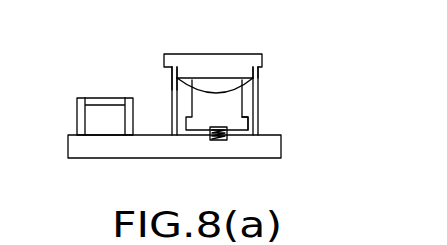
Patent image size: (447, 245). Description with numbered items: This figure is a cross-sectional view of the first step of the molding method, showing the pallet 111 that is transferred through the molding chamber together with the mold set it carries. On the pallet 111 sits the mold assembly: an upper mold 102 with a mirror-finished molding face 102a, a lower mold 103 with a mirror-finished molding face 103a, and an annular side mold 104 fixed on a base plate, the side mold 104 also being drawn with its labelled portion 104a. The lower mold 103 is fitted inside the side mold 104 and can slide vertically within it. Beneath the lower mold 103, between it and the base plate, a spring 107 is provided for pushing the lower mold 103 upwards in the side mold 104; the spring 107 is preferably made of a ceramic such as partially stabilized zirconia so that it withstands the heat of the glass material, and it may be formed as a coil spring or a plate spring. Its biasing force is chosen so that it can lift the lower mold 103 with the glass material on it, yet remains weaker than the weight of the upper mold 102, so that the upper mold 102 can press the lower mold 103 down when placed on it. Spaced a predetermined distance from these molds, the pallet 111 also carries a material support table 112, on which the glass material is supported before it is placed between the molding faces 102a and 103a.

The upper mold 102 is at (233, 53).
The mirror-finished molding face 102a is at (200, 90).
The lower mold 103 is at (245, 90).
The mirror-finished molding face 103a is at (257, 70).
The side mold 104 is at (245, 105).
The holder foot 104a is at (250, 125).
The spring 107 is at (218, 141).
The pallet 111 is at (282, 148).
The material support table 112 is at (76, 114).